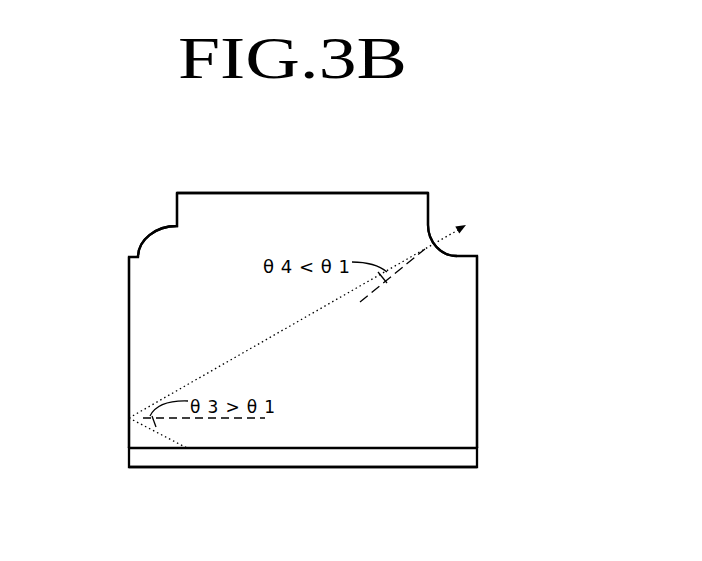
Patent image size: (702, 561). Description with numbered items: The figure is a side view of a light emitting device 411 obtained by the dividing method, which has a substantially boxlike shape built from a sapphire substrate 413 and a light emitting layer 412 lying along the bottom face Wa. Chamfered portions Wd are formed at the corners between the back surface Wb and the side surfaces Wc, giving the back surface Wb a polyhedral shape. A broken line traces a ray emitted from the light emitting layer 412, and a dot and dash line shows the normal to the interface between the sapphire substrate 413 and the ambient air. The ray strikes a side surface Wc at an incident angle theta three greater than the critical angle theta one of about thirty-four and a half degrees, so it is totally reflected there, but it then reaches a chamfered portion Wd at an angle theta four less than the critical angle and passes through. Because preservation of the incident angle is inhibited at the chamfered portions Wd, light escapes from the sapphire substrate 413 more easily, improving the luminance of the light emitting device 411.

The light emitting device 411 is at (304, 327).
The light emitting layer 412 is at (338, 483).
The sapphire substrate 413 is at (304, 297).
The bottom surface Wa is at (433, 467).
The back surface Wb is at (383, 193).
The side surfaces Wc is at (128, 313).
The chamfered portions Wd is at (177, 228).